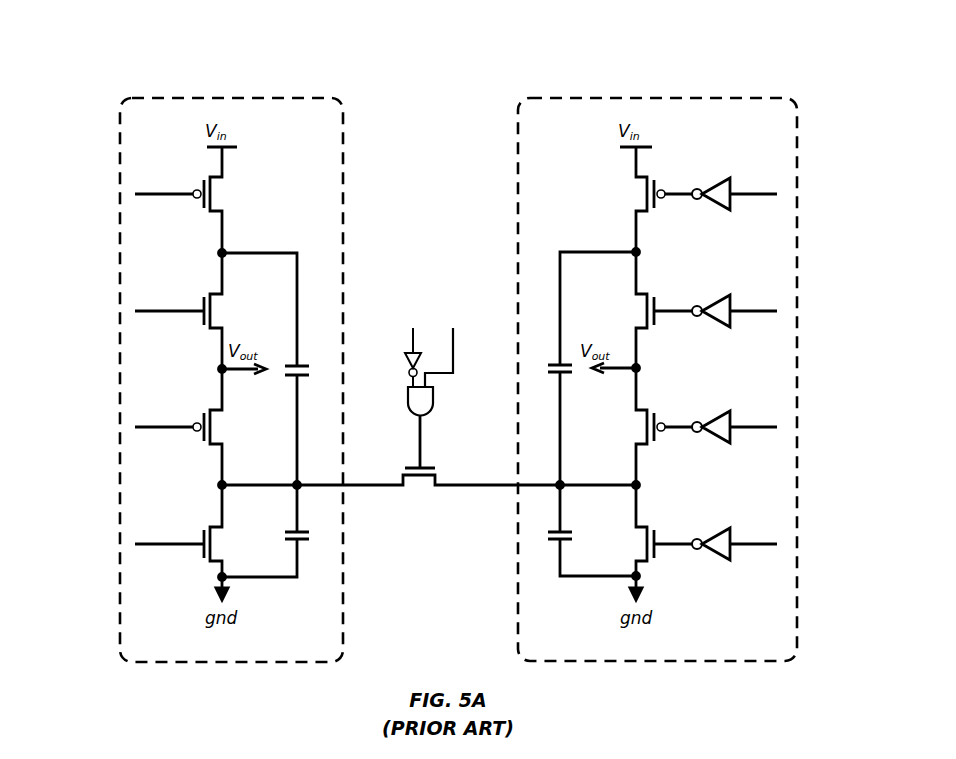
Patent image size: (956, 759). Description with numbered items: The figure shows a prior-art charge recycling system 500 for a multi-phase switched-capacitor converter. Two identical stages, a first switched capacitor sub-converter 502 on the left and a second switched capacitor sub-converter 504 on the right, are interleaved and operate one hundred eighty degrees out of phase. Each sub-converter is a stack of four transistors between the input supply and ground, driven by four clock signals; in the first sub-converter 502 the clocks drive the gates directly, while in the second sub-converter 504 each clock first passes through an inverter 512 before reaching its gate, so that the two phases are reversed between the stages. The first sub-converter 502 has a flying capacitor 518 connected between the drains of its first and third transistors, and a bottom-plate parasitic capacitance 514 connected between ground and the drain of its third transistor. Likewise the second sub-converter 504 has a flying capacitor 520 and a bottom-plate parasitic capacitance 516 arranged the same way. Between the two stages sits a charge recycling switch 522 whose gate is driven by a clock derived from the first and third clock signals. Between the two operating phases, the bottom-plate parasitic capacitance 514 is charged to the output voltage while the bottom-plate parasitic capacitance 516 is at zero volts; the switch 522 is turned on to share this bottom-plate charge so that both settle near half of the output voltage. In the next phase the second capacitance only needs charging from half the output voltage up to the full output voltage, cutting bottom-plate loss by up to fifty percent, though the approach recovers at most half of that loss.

The charge recycling system 500 is at (113, 54).
The first switched capacitor sub-converter 502 is at (296, 92).
The second switched capacitor sub-converter 504 is at (535, 97).
The inverter 512 is at (716, 182).
The bottom-plate parasitic capacitance 514 is at (300, 531).
The bottom-plate parasitic capacitance 516 is at (553, 531).
The flying capacitor 518 is at (275, 371).
The flying capacitor 520 is at (553, 377).
The switch 522 is at (425, 385).